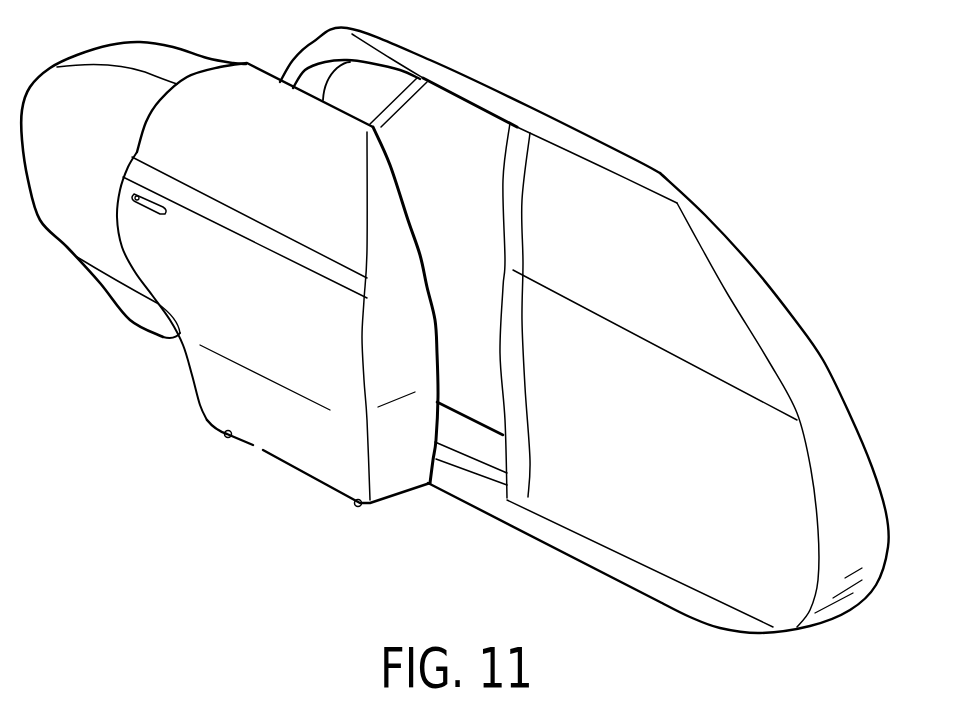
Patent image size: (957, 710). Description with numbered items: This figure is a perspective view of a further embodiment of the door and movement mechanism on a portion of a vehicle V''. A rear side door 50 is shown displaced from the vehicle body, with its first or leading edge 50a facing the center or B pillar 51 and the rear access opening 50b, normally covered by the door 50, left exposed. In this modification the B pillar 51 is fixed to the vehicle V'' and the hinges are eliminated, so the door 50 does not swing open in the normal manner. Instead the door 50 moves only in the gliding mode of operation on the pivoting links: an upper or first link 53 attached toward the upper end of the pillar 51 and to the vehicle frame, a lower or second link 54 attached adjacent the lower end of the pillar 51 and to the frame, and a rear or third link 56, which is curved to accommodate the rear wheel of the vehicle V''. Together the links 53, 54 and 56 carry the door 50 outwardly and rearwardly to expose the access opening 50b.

The rear side door 50 is at (165, 265).
The leading edge 50a is at (387, 204).
The access opening 50b is at (460, 434).
The center pillar 51 is at (517, 156).
The upper link 53 is at (410, 108).
The lower link 54 is at (360, 506).
The rear link 56 is at (226, 436).
The vehicle V'' is at (455, 331).